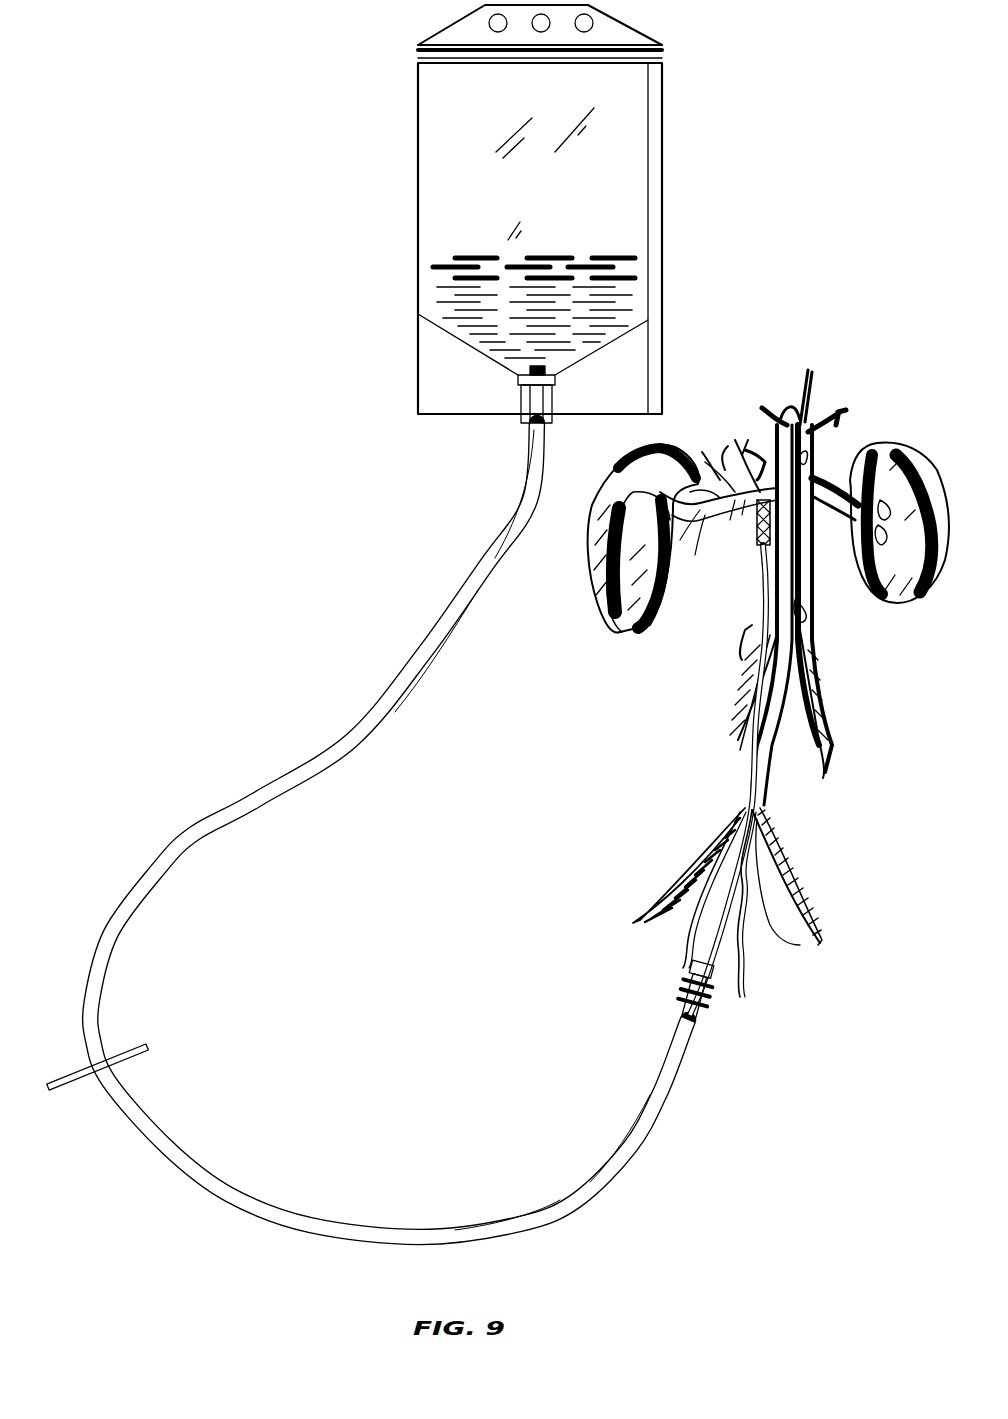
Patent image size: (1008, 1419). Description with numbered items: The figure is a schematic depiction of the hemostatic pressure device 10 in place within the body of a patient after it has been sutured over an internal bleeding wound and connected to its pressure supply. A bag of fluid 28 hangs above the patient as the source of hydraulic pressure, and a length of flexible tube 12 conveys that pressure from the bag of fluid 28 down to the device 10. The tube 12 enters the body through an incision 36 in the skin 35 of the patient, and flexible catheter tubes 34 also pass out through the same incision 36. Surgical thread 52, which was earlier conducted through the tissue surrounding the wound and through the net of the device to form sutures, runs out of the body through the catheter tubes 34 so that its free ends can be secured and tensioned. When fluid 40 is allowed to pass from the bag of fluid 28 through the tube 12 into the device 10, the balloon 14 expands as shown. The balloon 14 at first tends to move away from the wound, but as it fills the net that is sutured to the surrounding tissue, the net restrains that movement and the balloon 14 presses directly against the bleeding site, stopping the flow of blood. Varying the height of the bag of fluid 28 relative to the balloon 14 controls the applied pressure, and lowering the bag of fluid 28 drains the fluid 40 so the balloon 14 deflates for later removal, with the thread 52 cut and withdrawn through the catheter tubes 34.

The hemostatic pressure device 10 is at (738, 517).
The tube 12 is at (641, 1107).
The balloon 14 is at (756, 524).
The bag of fluid 28 is at (650, 285).
The catheter tubes 34 is at (747, 872).
The skin 35 is at (776, 857).
The incision 36 is at (800, 950).
The fluid 40 is at (585, 265).
The surgical thread 52 is at (747, 972).